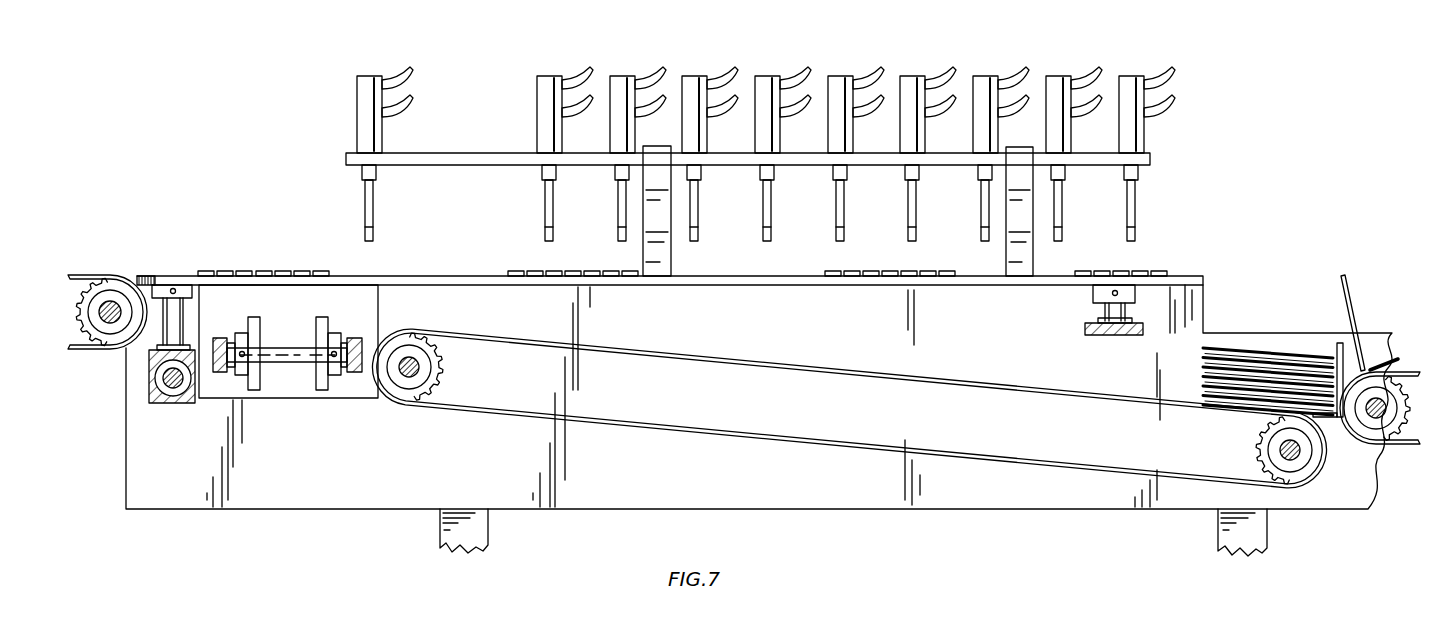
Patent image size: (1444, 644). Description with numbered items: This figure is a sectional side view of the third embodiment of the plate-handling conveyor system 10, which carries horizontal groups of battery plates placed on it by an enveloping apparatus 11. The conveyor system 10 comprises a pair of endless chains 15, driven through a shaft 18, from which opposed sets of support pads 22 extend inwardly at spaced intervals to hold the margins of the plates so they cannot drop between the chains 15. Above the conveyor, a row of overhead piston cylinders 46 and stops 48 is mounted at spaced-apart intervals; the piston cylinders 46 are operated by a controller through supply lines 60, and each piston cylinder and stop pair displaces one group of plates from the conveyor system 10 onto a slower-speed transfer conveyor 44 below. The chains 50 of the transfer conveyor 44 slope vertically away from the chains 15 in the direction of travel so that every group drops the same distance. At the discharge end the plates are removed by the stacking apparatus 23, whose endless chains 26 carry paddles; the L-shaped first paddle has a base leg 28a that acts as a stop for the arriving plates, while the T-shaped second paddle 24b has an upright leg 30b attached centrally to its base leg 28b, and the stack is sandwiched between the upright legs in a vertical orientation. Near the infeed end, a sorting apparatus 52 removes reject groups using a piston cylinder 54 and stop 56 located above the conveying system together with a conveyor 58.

The conveyor system 10 is at (345, 243).
The enveloping apparatus 11 is at (108, 262).
The endless chains 15 is at (760, 290).
The shaft 18 is at (183, 385).
The support pads 22 is at (320, 271).
The stacking apparatus 23 is at (1388, 288).
The second paddle 24b is at (1331, 286).
The endless chains 26 is at (1405, 447).
The base leg 28a is at (1333, 355).
The base leg 28b is at (1375, 367).
The upright leg 30b is at (1362, 292).
The transfer conveyor 44 is at (672, 441).
The piston cylinders 46 is at (641, 77).
The stops 48 is at (553, 233).
The chains 50 is at (862, 381).
The sorting apparatus 52 is at (301, 394).
The piston cylinder 54 is at (357, 78).
The stop 56 is at (374, 222).
The conveyor 58 is at (278, 313).
The supply lines 60 is at (414, 82).